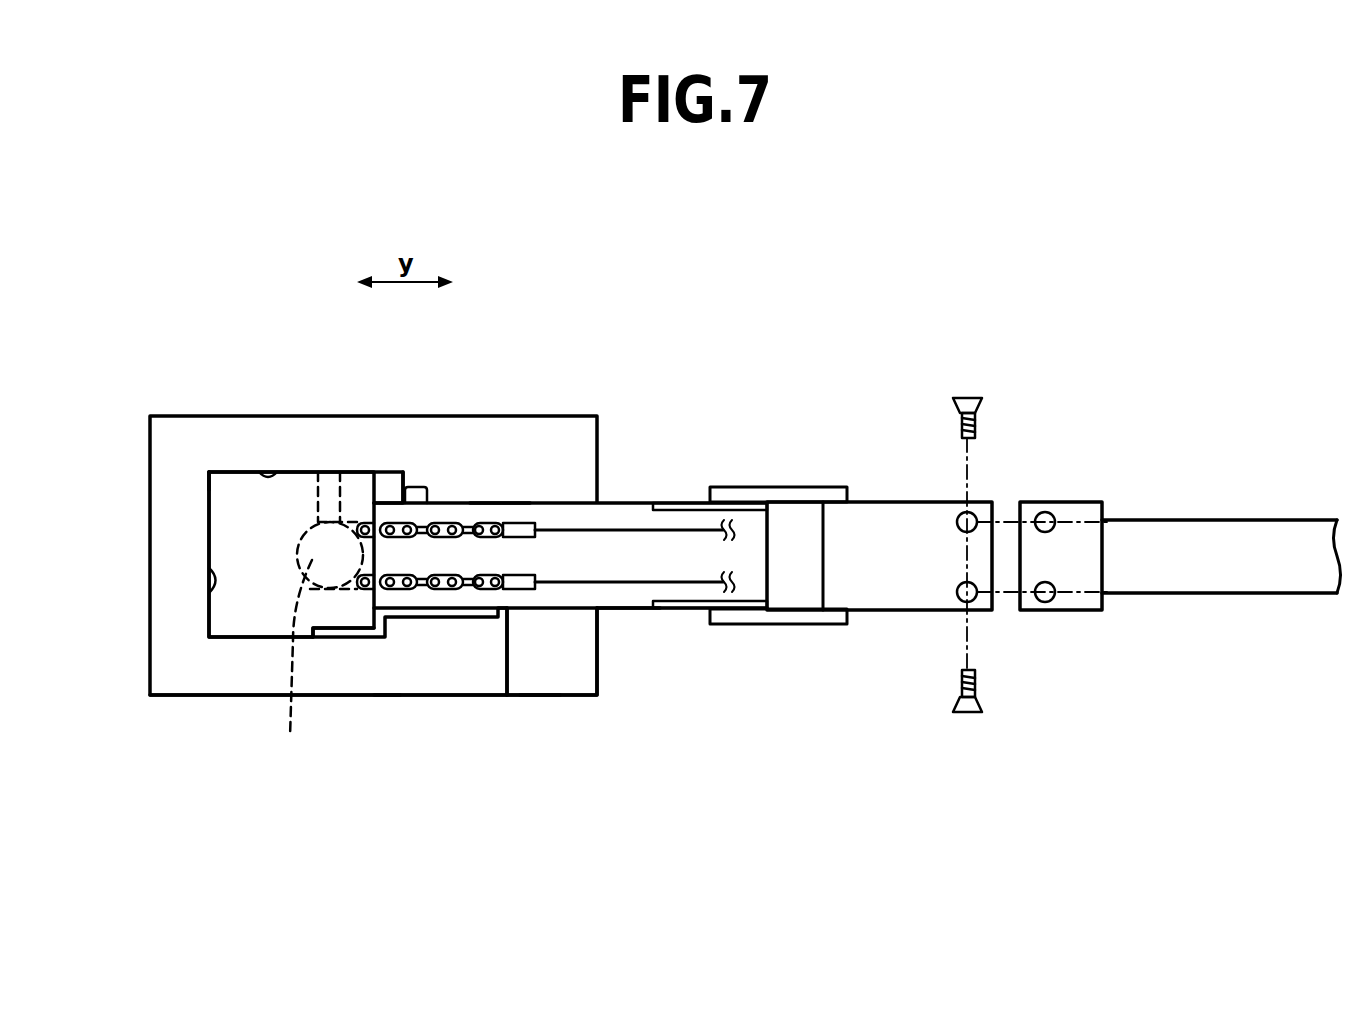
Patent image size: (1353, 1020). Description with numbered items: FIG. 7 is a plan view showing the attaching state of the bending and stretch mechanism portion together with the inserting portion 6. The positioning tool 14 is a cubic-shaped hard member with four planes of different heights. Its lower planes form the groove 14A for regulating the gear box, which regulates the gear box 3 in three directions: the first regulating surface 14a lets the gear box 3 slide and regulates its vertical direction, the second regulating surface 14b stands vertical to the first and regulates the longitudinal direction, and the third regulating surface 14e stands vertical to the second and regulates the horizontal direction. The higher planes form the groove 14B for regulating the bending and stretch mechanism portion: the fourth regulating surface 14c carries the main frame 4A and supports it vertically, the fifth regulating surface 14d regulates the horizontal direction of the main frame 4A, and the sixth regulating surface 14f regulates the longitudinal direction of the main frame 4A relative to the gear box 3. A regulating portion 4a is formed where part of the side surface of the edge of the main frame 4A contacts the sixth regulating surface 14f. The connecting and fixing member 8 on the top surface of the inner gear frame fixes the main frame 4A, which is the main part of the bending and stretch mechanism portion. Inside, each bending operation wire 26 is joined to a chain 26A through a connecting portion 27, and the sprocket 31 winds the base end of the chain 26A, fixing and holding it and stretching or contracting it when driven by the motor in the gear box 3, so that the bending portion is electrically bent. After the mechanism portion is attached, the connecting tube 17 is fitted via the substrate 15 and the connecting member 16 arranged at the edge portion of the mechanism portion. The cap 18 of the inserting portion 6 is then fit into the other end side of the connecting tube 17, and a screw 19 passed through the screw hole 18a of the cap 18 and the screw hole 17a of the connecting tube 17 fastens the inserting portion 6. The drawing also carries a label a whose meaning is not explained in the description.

The positioning tool 14 is at (548, 433).
The groove for regulating the gear box 14A is at (503, 670).
The groove for regulating the bending and stretch mechanism portion 14B is at (553, 653).
The first regulating surface 14a is at (383, 682).
The second regulating surface 14b is at (208, 596).
The fourth regulating surface 14c is at (537, 683).
The fifth regulating surface 14d is at (498, 503).
The third regulating surface 14e is at (255, 470).
The sixth regulating surface 14f is at (405, 474).
The cavity corner a is at (208, 470).
The gear box 3 is at (227, 617).
The connecting and fixing member 8 is at (342, 635).
The regulating portion 4a is at (417, 482).
The main frame 4A is at (623, 597).
The sprocket 31 is at (315, 624).
The chain 26A is at (442, 524).
The connecting portion 27 is at (522, 524).
The bending operation wire 26 is at (620, 530).
The substrate 15 is at (683, 503).
The connecting member 16 is at (785, 488).
The connecting tube 17 is at (870, 502).
The screw hole of the connecting tube 17a is at (960, 590).
The screw 19 is at (975, 398).
The cap 18 is at (1077, 512).
The screw hole of the cap 18a is at (1053, 598).
The inserting portion 6 is at (1258, 577).